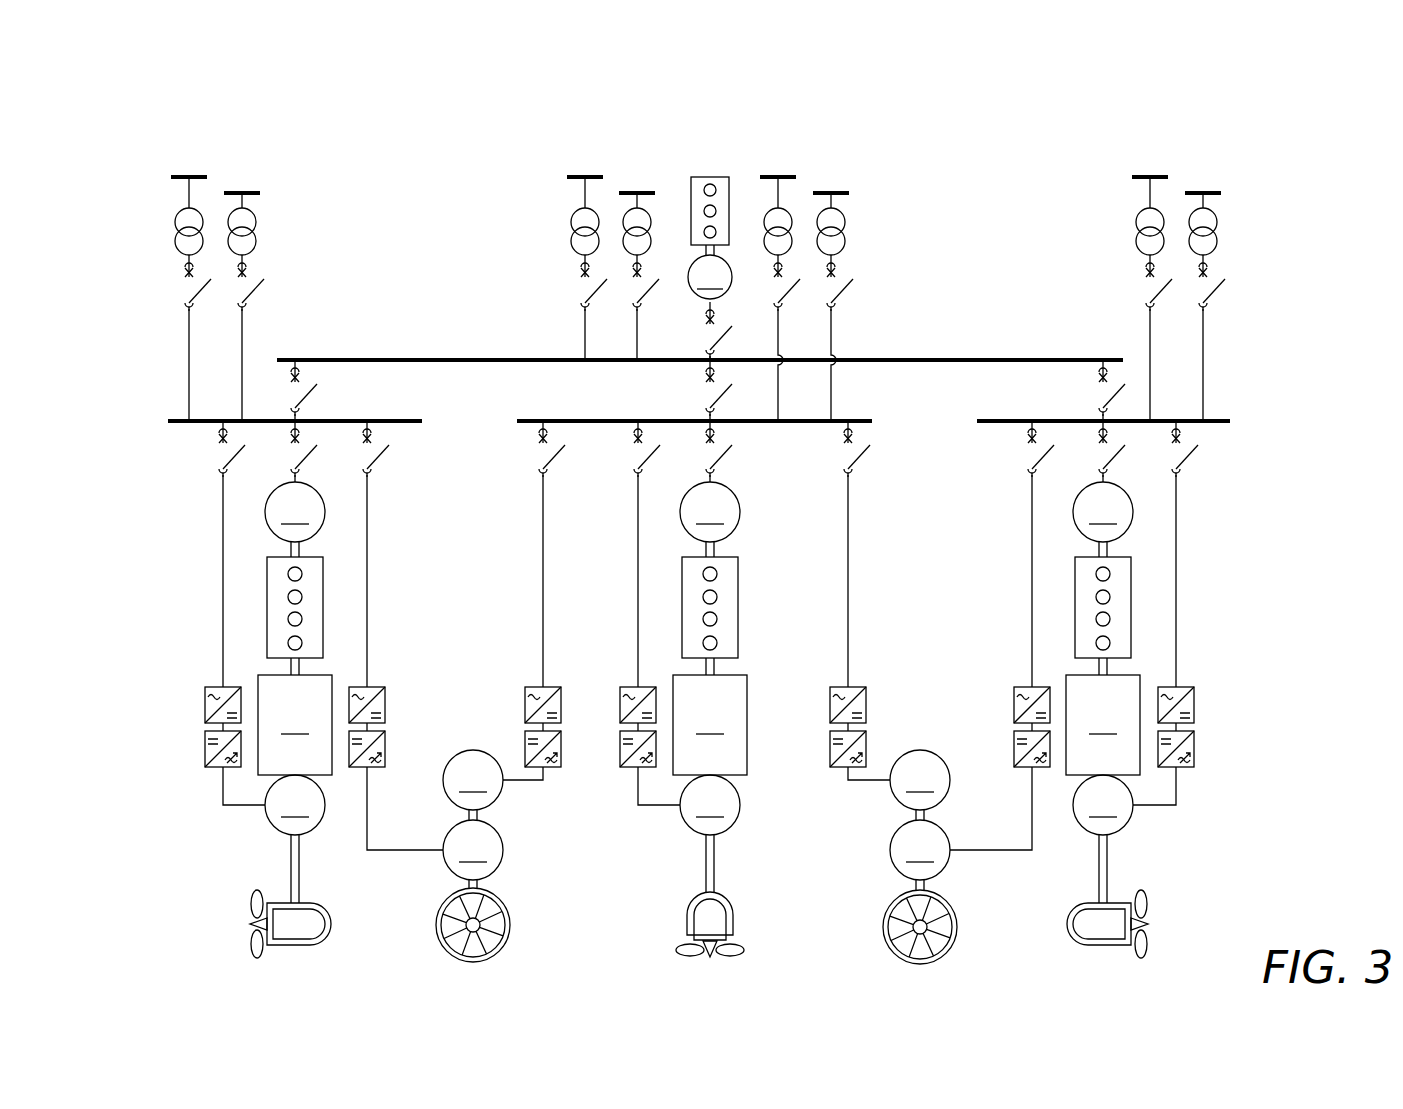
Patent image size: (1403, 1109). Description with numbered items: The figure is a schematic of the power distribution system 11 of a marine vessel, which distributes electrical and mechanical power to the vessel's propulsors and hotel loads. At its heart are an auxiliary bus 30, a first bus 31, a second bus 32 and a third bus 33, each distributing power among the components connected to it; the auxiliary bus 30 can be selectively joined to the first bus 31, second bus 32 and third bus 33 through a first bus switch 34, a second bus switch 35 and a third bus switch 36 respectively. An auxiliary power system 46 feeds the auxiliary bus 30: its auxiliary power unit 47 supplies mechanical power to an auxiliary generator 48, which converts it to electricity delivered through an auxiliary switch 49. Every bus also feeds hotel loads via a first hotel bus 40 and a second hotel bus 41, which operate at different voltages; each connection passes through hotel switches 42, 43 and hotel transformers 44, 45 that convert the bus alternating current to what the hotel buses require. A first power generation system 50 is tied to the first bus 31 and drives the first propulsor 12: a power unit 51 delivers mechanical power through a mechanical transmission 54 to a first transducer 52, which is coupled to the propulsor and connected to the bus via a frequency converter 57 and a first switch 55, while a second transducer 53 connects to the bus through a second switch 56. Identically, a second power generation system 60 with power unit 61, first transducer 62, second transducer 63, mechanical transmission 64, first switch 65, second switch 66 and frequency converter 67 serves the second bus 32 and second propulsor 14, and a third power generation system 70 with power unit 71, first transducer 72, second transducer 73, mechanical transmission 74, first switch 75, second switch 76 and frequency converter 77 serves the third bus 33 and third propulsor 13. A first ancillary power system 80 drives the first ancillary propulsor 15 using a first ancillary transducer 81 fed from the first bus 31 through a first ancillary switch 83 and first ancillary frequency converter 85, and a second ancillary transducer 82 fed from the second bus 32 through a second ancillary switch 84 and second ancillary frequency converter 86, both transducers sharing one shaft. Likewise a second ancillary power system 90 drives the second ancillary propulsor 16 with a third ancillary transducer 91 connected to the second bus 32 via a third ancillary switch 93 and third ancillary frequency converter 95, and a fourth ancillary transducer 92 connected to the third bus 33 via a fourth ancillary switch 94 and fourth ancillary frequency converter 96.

The power distribution system 11 is at (1318, 885).
The first propulsor 12 is at (250, 944).
The third propulsor 13 is at (1150, 944).
The second propulsor 14 is at (745, 949).
The first ancillary propulsor 15 is at (511, 926).
The second ancillary propulsor 16 is at (958, 926).
The auxiliary bus 30 is at (1062, 358).
The first bus 31 is at (409, 419).
The second bus 32 is at (528, 419).
The third bus 33 is at (990, 419).
The first bus switch 34 is at (307, 396).
The second bus switch 35 is at (728, 392).
The third bus switch 36 is at (1113, 397).
The first hotel bus 40 is at (190, 176).
The second hotel bus 41 is at (244, 192).
The hotel switch 42 is at (201, 288).
The hotel switch 43 is at (257, 288).
The hotel transformer 44 is at (176, 226).
The hotel transformer 45 is at (257, 226).
The auxiliary power system 46 is at (745, 123).
The auxiliary power unit 47 is at (710, 176).
The auxiliary generator 48 is at (710, 277).
The auxiliary switch 49 is at (731, 332).
The first power generation system 50 is at (217, 848).
The power unit 51 is at (324, 568).
The first transducer 52 is at (295, 805).
The second transducer 53 is at (295, 512).
The mechanical transmission 54 is at (295, 725).
The first switch 55 is at (232, 458).
The second switch 56 is at (307, 457).
The frequency converter 57 is at (199, 727).
The second power generation system 60 is at (755, 838).
The power unit 61 is at (740, 568).
The first transducer 62 is at (710, 805).
The second transducer 63 is at (710, 512).
The mechanical transmission 64 is at (710, 725).
The first switch 65 is at (647, 458).
The second switch 66 is at (722, 457).
The frequency converter 67 is at (613, 727).
The third power generation system 70 is at (1188, 820).
The power unit 71 is at (1133, 570).
The first transducer 72 is at (1103, 805).
The second transducer 73 is at (1103, 512).
The mechanical transmission 74 is at (1103, 725).
The first switch 75 is at (1188, 457).
The second switch 76 is at (1115, 457).
The frequency converter 77 is at (1203, 727).
The first ancillary power system 80 is at (527, 862).
The first ancillary transducer 81 is at (473, 850).
The second ancillary transducer 82 is at (473, 780).
The first ancillary switch 83 is at (378, 457).
The second ancillary switch 84 is at (552, 458).
The first ancillary frequency converter 85 is at (393, 727).
The second ancillary frequency converter 86 is at (519, 727).
The second ancillary power system 90 is at (868, 882).
The third ancillary transducer 91 is at (920, 780).
The fourth ancillary transducer 92 is at (920, 850).
The third ancillary switch 93 is at (860, 457).
The fourth ancillary switch 94 is at (1041, 458).
The third ancillary frequency converter 95 is at (824, 727).
The fourth ancillary frequency converter 96 is at (1008, 727).